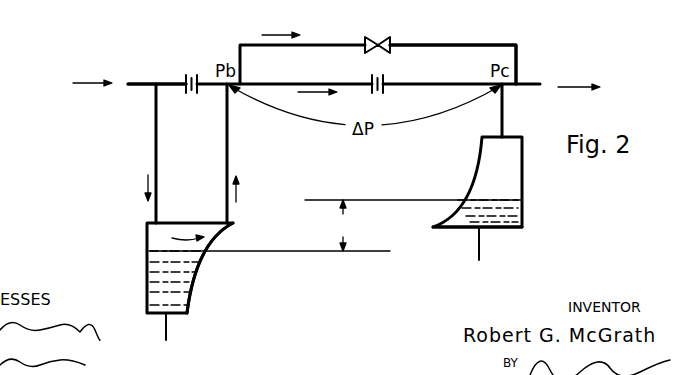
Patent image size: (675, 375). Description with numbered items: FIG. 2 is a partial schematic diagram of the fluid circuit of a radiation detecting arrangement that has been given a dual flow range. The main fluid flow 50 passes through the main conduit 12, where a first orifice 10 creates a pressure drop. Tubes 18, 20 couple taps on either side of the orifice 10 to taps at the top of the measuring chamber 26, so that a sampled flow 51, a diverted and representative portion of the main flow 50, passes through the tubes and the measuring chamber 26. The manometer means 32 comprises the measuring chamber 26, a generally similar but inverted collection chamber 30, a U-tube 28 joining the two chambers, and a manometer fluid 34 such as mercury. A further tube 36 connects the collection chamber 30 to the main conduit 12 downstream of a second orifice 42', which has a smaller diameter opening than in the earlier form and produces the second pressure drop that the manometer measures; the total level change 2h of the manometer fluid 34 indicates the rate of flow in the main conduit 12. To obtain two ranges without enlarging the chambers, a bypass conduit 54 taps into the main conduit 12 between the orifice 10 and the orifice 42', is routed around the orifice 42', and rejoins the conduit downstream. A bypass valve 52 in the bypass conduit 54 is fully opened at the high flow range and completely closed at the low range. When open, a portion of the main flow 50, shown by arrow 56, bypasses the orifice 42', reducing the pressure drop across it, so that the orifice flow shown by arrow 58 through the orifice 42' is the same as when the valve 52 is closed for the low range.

The orifice 10 is at (186, 75).
The main conduit 12 is at (140, 82).
The tube 18 is at (156, 135).
The tube 20 is at (227, 136).
The measuring chamber 26 is at (145, 229).
The U-tube 28 is at (478, 253).
The collection chamber 30 is at (522, 181).
The manometer means 32 is at (488, 229).
The manometer fluid 34 is at (192, 290).
The tube 36 is at (504, 115).
The orifice 42' is at (396, 77).
The main fluid flow 50 is at (87, 80).
The sampled flow 51 is at (145, 180).
The bypass valve 52 is at (380, 38).
The bypass conduit 54 is at (462, 44).
The bypassed flow 56 is at (270, 34).
The orifice flow 58 is at (311, 93).
The total level change 2h is at (335, 225).